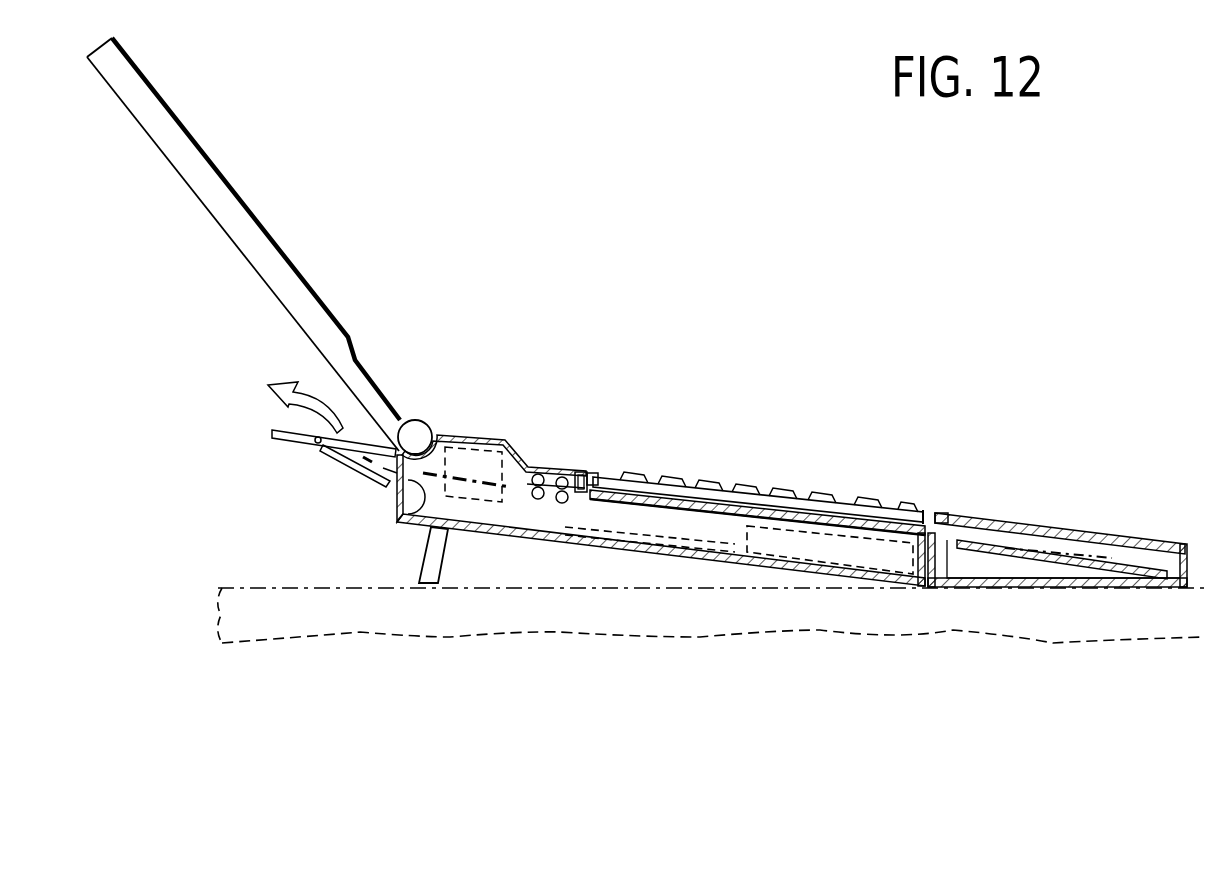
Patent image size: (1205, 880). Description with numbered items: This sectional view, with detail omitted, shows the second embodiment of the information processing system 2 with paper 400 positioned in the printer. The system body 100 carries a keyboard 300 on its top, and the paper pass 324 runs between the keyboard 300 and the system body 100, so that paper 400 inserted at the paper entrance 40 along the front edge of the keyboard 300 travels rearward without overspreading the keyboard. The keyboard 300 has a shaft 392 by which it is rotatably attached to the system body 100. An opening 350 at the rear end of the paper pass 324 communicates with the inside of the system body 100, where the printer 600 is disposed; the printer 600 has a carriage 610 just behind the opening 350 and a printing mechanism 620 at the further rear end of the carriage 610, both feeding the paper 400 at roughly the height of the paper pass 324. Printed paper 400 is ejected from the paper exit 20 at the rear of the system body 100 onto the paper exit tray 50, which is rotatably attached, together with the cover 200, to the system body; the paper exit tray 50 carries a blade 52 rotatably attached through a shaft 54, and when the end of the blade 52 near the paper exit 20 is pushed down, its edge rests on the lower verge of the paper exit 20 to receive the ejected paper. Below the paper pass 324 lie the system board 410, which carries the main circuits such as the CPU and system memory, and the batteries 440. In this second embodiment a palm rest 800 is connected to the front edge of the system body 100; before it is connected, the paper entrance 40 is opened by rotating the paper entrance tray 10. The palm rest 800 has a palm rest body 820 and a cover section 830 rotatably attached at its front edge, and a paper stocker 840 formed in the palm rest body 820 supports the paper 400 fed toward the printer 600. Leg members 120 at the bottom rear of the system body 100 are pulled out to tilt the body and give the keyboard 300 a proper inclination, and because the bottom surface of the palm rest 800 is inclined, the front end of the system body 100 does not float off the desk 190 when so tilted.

The information processing system 2 is at (486, 280).
The paper entrance tray 10 is at (953, 577).
The paper exit 20 is at (622, 563).
The paper entrance 40 is at (953, 518).
The paper exit tray 50 is at (273, 432).
The blade 52 is at (345, 457).
The shaft 54 is at (316, 442).
The system body 100 is at (519, 535).
The leg members 120 is at (428, 573).
The desk 190 is at (215, 602).
The cover 200 is at (233, 215).
The keyboard 300 is at (832, 497).
The paper pass 324 is at (910, 510).
The opening 350 is at (581, 472).
The shaft 392 is at (600, 475).
The paper 400 is at (718, 512).
The system board 410 is at (606, 548).
The batteries 440 is at (835, 548).
The printer 600 is at (536, 401).
The carriage 610 is at (539, 474).
The printing mechanism 620 is at (461, 448).
The palm rest 800 is at (1063, 593).
The palm rest body 820 is at (1088, 583).
The cover section 830 is at (1040, 530).
The paper stocker 840 is at (1033, 553).